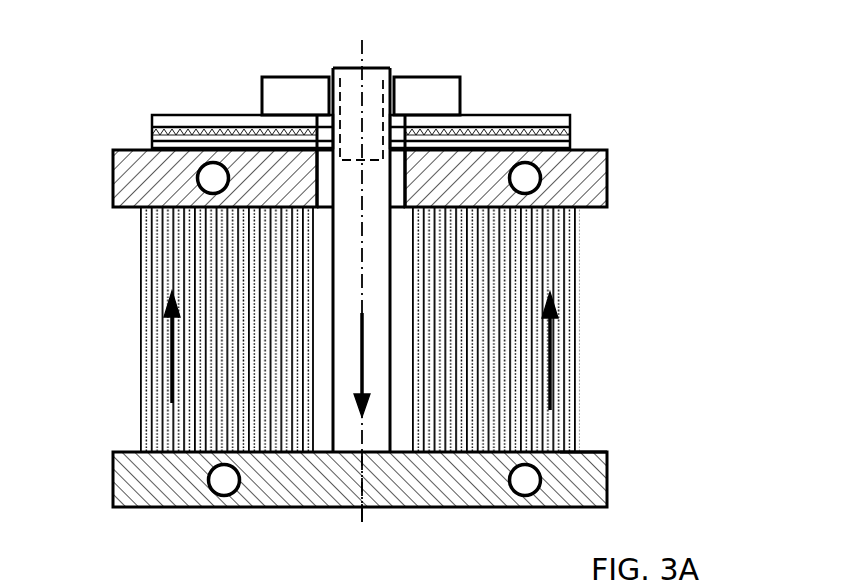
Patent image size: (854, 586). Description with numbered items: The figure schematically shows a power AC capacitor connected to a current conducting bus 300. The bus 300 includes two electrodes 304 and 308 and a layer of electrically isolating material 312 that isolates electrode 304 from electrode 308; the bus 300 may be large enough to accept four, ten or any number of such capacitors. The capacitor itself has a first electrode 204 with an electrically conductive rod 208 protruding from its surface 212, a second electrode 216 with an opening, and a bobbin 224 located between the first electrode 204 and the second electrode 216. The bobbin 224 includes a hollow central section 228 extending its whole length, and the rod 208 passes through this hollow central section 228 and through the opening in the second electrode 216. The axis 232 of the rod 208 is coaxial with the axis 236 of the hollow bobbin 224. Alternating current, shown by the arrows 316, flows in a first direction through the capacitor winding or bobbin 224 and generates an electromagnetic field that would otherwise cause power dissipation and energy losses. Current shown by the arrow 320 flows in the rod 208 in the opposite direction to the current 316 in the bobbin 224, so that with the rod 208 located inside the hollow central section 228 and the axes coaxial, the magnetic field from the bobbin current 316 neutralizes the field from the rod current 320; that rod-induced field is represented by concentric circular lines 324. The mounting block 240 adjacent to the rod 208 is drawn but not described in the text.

The first electrode 204 is at (112, 478).
The electrically conductive rod 208 is at (378, 77).
The surface of first electrode 212 is at (595, 452).
The second electrode 216 is at (125, 198).
The bobbin 224 is at (582, 245).
The hollow central section 228 is at (362, 415).
The axis of electrically conductive rod 232 is at (362, 522).
The axis of hollow bobbin 236 is at (423, 537).
The mounting block 240 is at (447, 85).
The current conducting bus 300 is at (526, 113).
The electrode 304 is at (571, 126).
The electrode 308 is at (557, 143).
The layer of electrically isolating material 312 is at (153, 132).
The arrows showing alternating current 316 is at (170, 383).
The arrow showing current in rod 320 is at (322, 438).
The concentric circular lines 324 is at (297, 122).